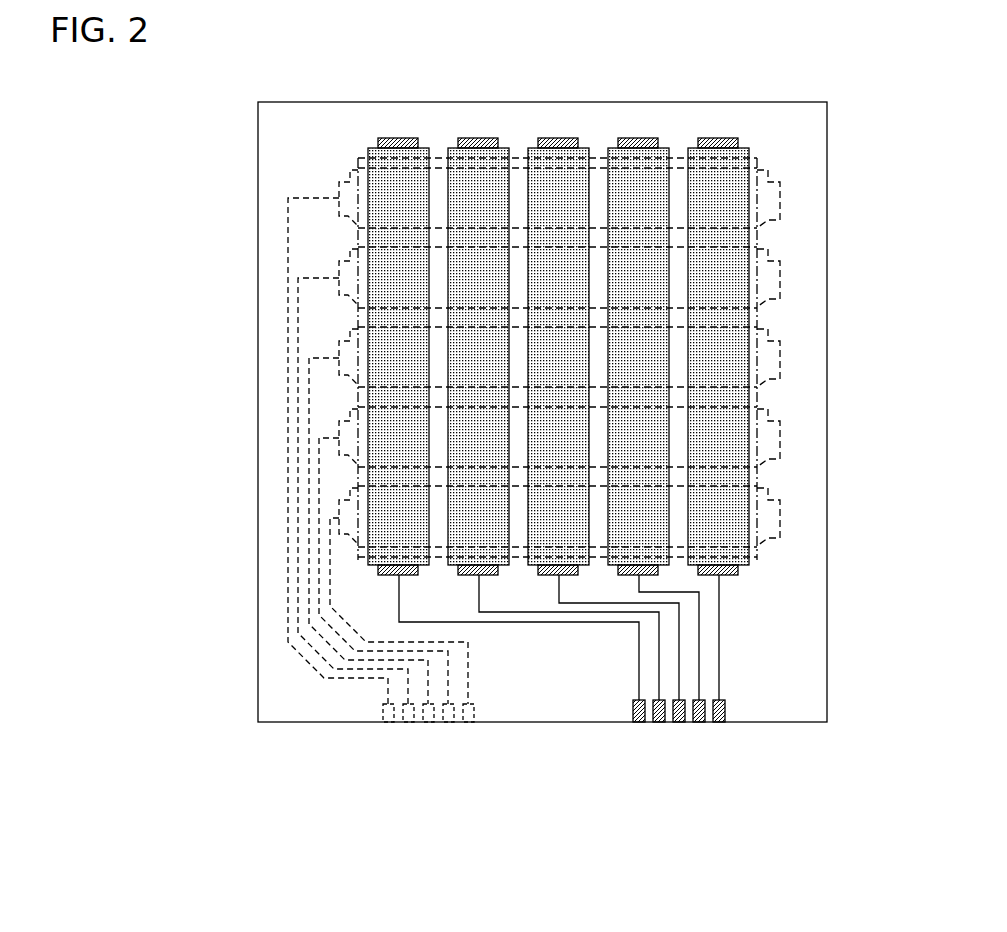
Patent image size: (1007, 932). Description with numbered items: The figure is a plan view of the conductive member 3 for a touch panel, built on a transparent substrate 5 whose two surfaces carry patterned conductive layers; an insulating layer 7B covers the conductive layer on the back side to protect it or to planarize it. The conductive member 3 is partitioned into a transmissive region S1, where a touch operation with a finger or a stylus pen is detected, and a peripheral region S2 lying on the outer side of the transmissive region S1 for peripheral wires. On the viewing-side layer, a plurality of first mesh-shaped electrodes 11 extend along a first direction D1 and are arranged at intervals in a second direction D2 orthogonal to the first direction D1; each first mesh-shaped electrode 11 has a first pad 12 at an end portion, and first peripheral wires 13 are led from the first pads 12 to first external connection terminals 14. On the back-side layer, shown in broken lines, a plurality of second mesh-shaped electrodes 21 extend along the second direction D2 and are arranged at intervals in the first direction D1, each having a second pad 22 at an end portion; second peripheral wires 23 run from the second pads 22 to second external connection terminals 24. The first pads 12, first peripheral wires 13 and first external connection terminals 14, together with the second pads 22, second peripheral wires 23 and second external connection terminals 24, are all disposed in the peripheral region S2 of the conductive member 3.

The conductive member for a touch panel 3 is at (238, 105).
The transparent substrate 5 is at (833, 357).
The insulating layer 7B is at (280, 683).
The first mesh-shaped electrode 11 is at (423, 147).
The first pad 12 is at (376, 572).
The first peripheral wire 13 is at (592, 623).
The first external connection terminal 14 is at (640, 723).
The second mesh-shaped electrode 21 is at (760, 163).
The second pad 22 is at (340, 186).
The second peripheral wire 23 is at (288, 258).
The second external connection terminal 24 is at (387, 724).
The transmissive region S1 is at (755, 546).
The peripheral region S2 is at (788, 648).
The first direction D1 is at (205, 315).
The second direction D2 is at (652, 805).